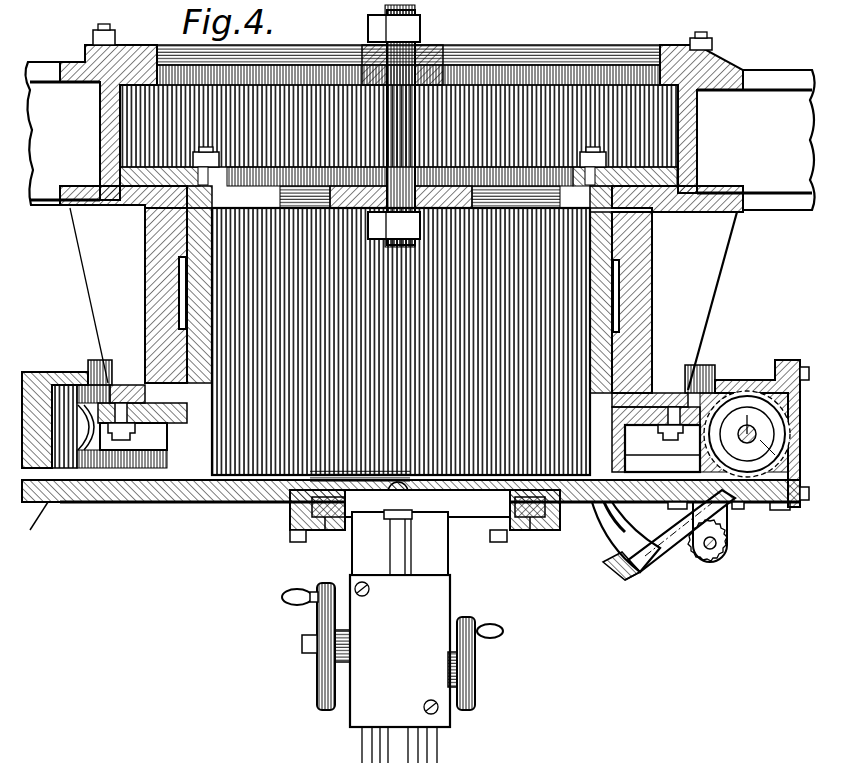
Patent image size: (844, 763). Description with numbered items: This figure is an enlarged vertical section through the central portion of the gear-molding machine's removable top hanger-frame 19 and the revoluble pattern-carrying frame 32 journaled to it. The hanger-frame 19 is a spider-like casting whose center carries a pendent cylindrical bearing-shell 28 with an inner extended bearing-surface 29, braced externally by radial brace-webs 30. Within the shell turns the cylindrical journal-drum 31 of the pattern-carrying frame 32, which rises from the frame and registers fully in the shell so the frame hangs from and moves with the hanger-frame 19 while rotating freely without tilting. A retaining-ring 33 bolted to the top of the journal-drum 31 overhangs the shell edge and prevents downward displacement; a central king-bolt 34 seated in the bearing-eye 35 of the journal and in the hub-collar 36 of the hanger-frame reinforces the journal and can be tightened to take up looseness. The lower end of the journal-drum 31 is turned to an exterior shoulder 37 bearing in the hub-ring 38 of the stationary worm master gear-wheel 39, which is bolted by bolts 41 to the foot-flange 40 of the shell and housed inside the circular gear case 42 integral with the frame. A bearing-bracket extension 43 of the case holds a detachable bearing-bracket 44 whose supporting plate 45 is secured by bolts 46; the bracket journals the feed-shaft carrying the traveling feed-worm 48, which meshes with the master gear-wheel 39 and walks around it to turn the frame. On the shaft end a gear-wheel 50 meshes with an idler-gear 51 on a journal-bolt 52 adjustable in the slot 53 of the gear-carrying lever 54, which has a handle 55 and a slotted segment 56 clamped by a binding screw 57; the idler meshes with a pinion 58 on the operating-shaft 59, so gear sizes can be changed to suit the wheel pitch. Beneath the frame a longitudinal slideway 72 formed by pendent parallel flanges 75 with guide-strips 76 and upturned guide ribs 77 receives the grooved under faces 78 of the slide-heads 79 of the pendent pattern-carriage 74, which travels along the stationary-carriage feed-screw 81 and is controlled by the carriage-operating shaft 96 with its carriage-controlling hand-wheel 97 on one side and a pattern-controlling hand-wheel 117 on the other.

The top hanger-frame 19 is at (419, 136).
The cylindrical bearing-shell 28 is at (146, 264).
The inner extended bearing-surface 29 is at (150, 226).
The brace-webs 30 is at (730, 282).
The journal-drum 31 is at (200, 300).
The pattern-carrying frame 32 is at (232, 494).
The retaining-ring 33 is at (103, 178).
The king-bolt 34 is at (412, 125).
The central bearing-eye 35 is at (458, 212).
The hub-collar 36 is at (445, 48).
The exterior shoulder 37 is at (172, 430).
The hub-ring 38 is at (180, 400).
The worm master gear-wheel 39 is at (94, 470).
The foot-flange 40 is at (96, 372).
The bolts 41 is at (119, 402).
The gear case 42 is at (37, 518).
The bearing-bracket extension 43 is at (775, 510).
The bearing-bracket 44 is at (790, 446).
The supporting plate 45 is at (795, 458).
The bolts 46 is at (803, 374).
The traveling feed-worm 48 is at (752, 410).
The gear-wheel 50 is at (792, 418).
The idler-gear 51 is at (732, 510).
The journal-bolt 52 is at (680, 548).
The slot 53 is at (646, 568).
The gear-carrying lever 54 is at (628, 576).
The handle 55 is at (608, 566).
The slotted segment 56 is at (612, 515).
The binding screw 57 is at (592, 500).
The pinion 58 is at (724, 562).
The operating-shaft 59 is at (708, 552).
The longitudinal slideway 72 is at (300, 510).
The pattern-carriage 74 is at (400, 636).
The pendent parallel flanges 75 is at (292, 500).
The guide-strips 76 is at (296, 532).
The guide ribs 77 is at (328, 518).
The grooved under faces 78 is at (512, 520).
The slide-heads 79 is at (462, 510).
The stationary-carriage feed-screw 81 is at (408, 490).
The carriage-operating shaft 96 is at (302, 644).
The carriage-controlling hand-wheel 97 is at (326, 678).
The pattern-controlling hand-wheel 117 is at (476, 678).